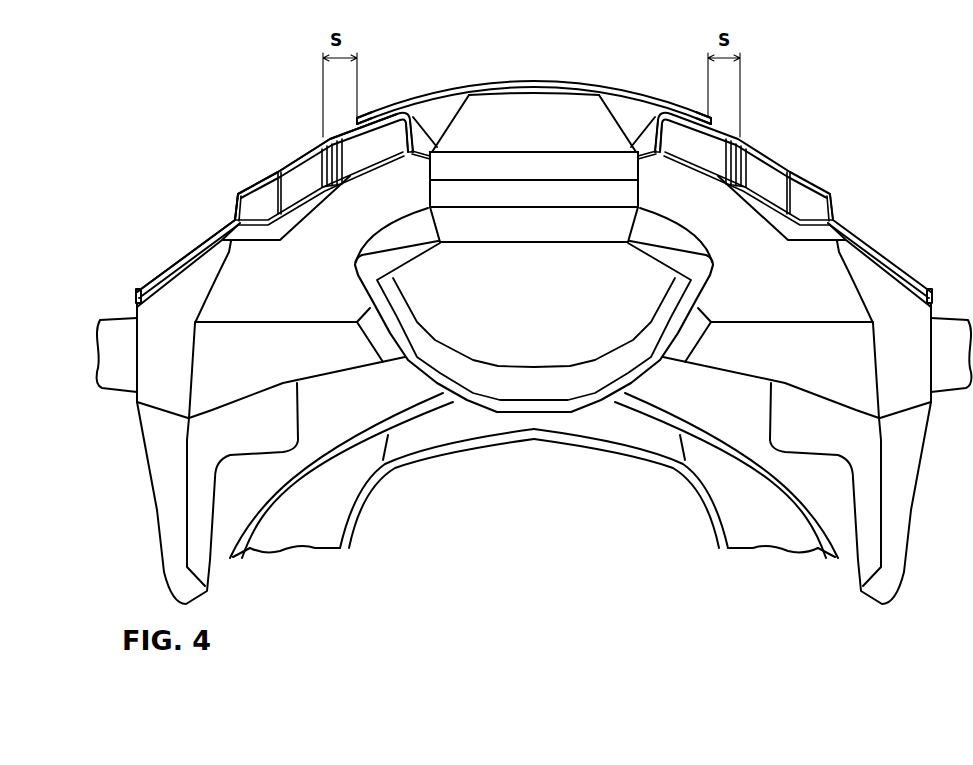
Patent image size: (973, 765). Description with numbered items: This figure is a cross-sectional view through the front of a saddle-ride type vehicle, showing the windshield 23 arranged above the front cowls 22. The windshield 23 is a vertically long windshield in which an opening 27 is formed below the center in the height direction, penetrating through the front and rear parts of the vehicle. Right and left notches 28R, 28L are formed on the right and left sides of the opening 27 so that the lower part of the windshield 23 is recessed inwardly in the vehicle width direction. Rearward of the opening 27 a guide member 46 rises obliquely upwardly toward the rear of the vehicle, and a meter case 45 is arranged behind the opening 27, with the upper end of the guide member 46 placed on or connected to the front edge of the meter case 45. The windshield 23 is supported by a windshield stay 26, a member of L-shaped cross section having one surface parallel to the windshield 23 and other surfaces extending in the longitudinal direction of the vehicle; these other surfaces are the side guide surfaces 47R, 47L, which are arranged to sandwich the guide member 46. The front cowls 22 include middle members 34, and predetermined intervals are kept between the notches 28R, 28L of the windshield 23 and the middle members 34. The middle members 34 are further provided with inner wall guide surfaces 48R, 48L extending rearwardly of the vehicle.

The front cowl 22 is at (806, 176).
The middle member 34 is at (267, 203).
The windshield 23 is at (664, 85).
The opening 27 is at (457, 92).
The left notch 28L is at (357, 121).
The right notch 28R is at (712, 119).
The windshield stay 26 is at (399, 127).
The meter case 45 is at (535, 340).
The guide member 46 is at (537, 120).
The left side guide surface 47L is at (424, 137).
The right side guide surface 47R is at (641, 137).
The left inner wall guide surface 48L is at (340, 168).
The right inner wall guide surface 48R is at (726, 168).